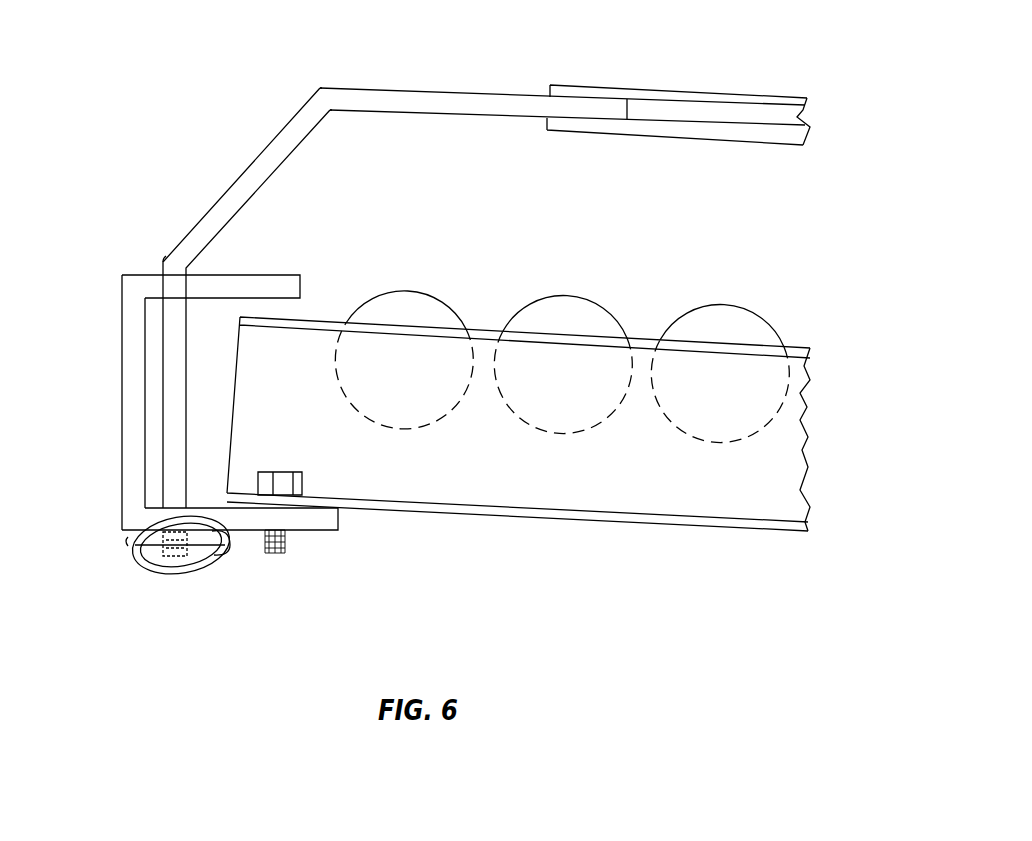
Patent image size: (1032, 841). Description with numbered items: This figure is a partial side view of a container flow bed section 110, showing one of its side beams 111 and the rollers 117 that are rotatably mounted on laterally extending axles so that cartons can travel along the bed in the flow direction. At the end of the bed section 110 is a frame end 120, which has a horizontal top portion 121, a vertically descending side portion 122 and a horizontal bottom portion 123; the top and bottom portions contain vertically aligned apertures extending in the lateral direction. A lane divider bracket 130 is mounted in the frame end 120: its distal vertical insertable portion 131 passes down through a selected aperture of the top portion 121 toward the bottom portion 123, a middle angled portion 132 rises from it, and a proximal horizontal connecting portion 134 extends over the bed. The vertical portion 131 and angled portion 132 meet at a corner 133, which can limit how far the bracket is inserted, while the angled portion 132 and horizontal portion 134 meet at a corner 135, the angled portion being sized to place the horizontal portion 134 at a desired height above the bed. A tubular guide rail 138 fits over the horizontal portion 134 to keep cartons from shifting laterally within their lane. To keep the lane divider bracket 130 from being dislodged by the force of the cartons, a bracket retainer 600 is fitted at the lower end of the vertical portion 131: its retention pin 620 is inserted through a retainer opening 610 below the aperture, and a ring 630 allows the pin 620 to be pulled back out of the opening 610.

The bed section 110 is at (445, 567).
The side beams 111 is at (748, 495).
The rollers 117 is at (672, 310).
The frame end 120 is at (209, 424).
The horizontal top portion 121 is at (269, 272).
The vertically descending side portion 122 is at (121, 457).
The horizontal bottom portion 123 is at (243, 532).
The lane divider bracket 130 is at (435, 147).
The distal vertical insertable portion 131 is at (172, 366).
The middle angled portion 132 is at (238, 180).
The corner 133 is at (163, 263).
The proximal horizontal connecting portion 134 is at (460, 93).
The corner 135 is at (320, 88).
The guide rail 138 is at (712, 100).
The bracket retainer 600 is at (147, 577).
The retainer opening 610 is at (168, 550).
The retention pin 620 is at (150, 567).
The ring 630 is at (188, 570).